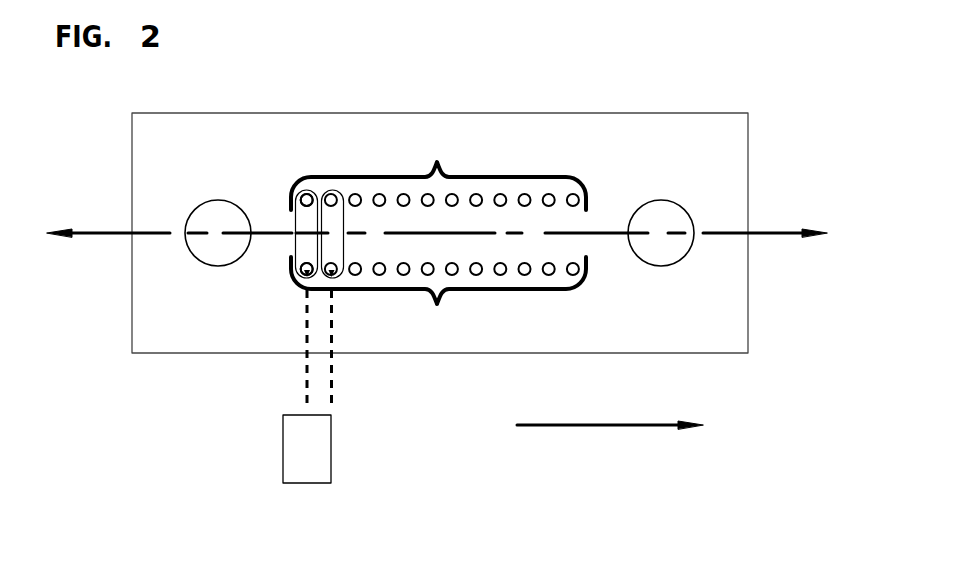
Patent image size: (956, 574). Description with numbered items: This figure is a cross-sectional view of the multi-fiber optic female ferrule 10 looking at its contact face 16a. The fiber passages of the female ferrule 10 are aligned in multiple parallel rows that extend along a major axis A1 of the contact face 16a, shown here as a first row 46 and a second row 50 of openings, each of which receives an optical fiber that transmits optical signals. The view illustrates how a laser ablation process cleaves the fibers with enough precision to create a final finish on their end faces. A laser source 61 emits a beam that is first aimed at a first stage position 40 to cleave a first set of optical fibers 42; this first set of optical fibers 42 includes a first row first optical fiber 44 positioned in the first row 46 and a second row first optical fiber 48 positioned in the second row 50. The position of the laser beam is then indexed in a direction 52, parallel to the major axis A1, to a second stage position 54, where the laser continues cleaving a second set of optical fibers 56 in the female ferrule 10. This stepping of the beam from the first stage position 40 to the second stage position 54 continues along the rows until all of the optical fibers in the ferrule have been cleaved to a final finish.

The female ferrule 10 is at (648, 107).
The contact face 16a is at (730, 322).
The first stage position 40 is at (307, 380).
The first set of optical fibers 42 is at (295, 246).
The first row first optical fiber 44 is at (306, 199).
The first row 46 is at (438, 172).
The second row first optical fiber 48 is at (305, 271).
The second row 50 is at (438, 296).
The direction 52 is at (597, 425).
The second stage position 54 is at (333, 339).
The second set of optical fibers 56 is at (334, 178).
The laser source 61 is at (320, 457).
The major axis A1 is at (778, 230).